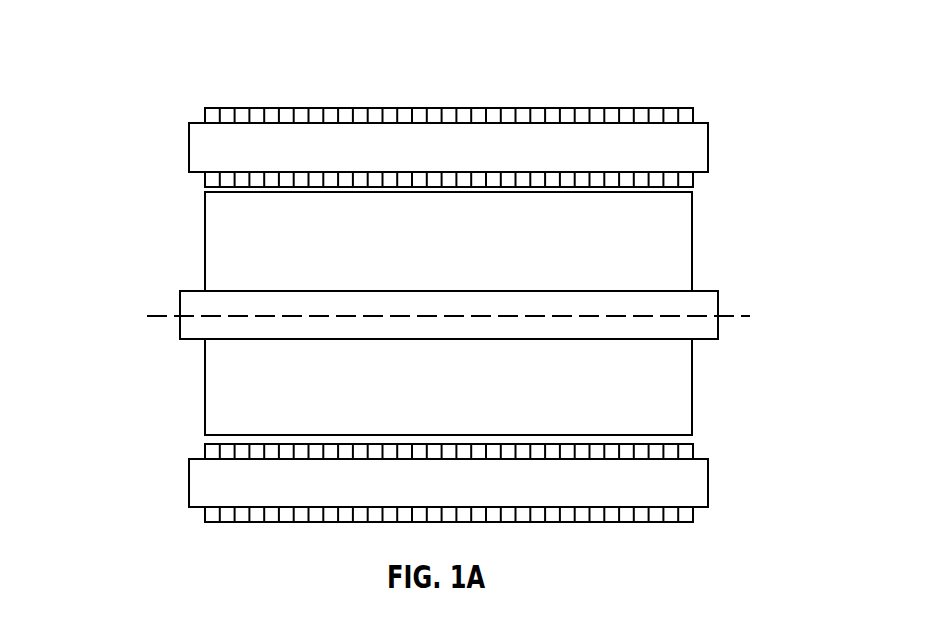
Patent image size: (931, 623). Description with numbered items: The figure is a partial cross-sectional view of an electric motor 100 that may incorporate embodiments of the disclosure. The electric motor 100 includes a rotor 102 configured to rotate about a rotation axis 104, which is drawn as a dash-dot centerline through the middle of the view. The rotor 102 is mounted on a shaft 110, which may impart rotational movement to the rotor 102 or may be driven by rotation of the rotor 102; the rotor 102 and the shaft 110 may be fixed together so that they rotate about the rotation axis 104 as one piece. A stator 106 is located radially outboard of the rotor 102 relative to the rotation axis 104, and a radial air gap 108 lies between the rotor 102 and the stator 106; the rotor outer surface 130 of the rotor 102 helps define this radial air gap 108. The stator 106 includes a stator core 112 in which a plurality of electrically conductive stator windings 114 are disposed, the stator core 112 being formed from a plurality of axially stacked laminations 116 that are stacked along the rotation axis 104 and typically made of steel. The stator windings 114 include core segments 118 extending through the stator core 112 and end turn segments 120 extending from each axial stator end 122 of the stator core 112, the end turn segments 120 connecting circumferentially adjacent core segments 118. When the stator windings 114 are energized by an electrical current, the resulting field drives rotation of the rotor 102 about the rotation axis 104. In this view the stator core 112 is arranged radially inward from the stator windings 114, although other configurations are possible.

The electric motor 100 is at (140, 45).
The rotor 102 is at (470, 256).
The rotation axis 104 is at (737, 316).
The stator 106 is at (669, 66).
The radial air gap 108 is at (206, 191).
The shaft 110 is at (188, 333).
The stator core 112 is at (481, 109).
The stator windings 114 is at (568, 145).
The laminations 116 is at (387, 113).
The core segments 118 is at (414, 130).
The end turn segments 120 is at (200, 155).
The axial stator end 122 is at (203, 120).
The rotor outer surface 130 is at (597, 195).